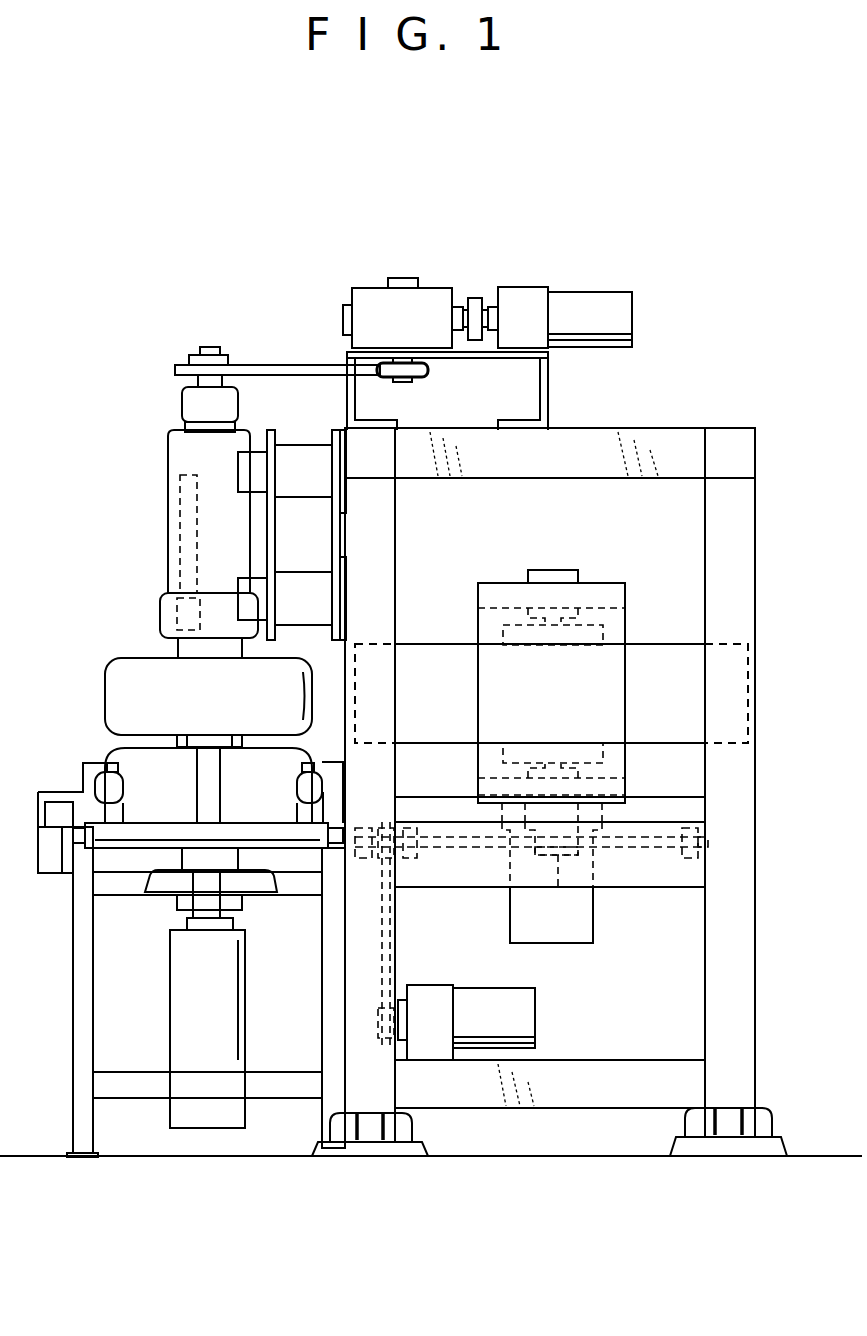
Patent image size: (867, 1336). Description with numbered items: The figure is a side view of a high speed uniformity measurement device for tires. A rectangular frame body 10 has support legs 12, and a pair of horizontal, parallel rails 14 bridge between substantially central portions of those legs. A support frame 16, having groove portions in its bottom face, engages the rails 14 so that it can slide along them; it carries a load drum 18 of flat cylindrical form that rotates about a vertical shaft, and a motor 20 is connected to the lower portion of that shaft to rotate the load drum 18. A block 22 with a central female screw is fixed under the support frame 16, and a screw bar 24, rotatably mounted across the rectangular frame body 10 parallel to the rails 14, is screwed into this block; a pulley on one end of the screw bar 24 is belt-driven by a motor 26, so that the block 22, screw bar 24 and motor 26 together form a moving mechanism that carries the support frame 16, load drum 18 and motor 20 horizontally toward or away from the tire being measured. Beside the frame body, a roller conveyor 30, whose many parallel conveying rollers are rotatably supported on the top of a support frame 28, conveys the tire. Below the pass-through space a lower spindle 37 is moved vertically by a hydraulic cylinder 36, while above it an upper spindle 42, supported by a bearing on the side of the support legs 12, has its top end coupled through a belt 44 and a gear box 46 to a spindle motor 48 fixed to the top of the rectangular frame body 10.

The rectangular frame body 10 is at (683, 424).
The support legs 12 is at (378, 556).
The rails 14 is at (660, 803).
The support frame 16 is at (612, 597).
The load drum 18 is at (665, 650).
The motor 20 is at (528, 913).
The block 22 is at (562, 890).
The screw bar 24 is at (653, 849).
The motor 26 is at (518, 1023).
The support frame 28 is at (80, 984).
The roller conveyor 30 is at (116, 862).
The hydraulic cylinder 36 is at (193, 1005).
The lower spindle 37 is at (203, 775).
The upper spindle 42 is at (188, 452).
The belt 44 is at (284, 365).
The gear box 46 is at (362, 288).
The spindle motor 48 is at (583, 300).